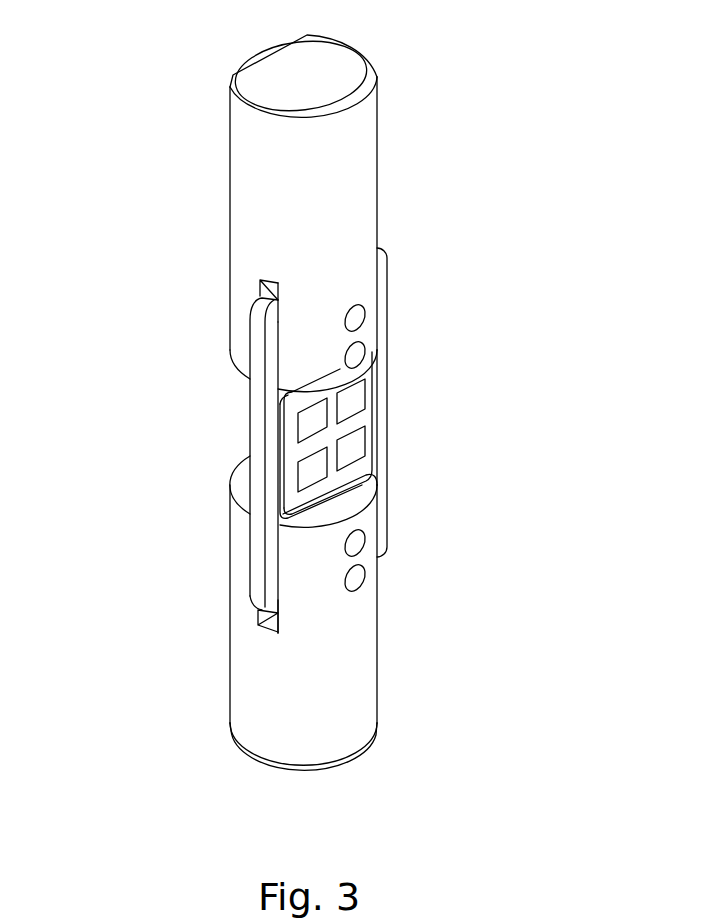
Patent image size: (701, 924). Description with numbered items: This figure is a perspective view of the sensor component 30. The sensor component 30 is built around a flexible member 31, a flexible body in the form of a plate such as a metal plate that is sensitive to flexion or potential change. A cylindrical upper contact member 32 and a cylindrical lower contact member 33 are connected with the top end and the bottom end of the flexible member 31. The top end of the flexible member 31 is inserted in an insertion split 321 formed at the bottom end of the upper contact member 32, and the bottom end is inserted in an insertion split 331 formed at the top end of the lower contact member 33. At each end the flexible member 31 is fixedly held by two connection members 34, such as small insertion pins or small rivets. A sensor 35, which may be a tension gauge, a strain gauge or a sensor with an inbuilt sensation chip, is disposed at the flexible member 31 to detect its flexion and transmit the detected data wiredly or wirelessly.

The sensor component 30 is at (418, 131).
The flexible member 31 is at (258, 424).
The upper contact member 32 is at (247, 215).
The insertion split 321 is at (278, 320).
The lower contact member 33 is at (258, 708).
The insertion split 331 is at (283, 602).
The connection members 34 is at (357, 318).
The sensor 35 is at (367, 415).